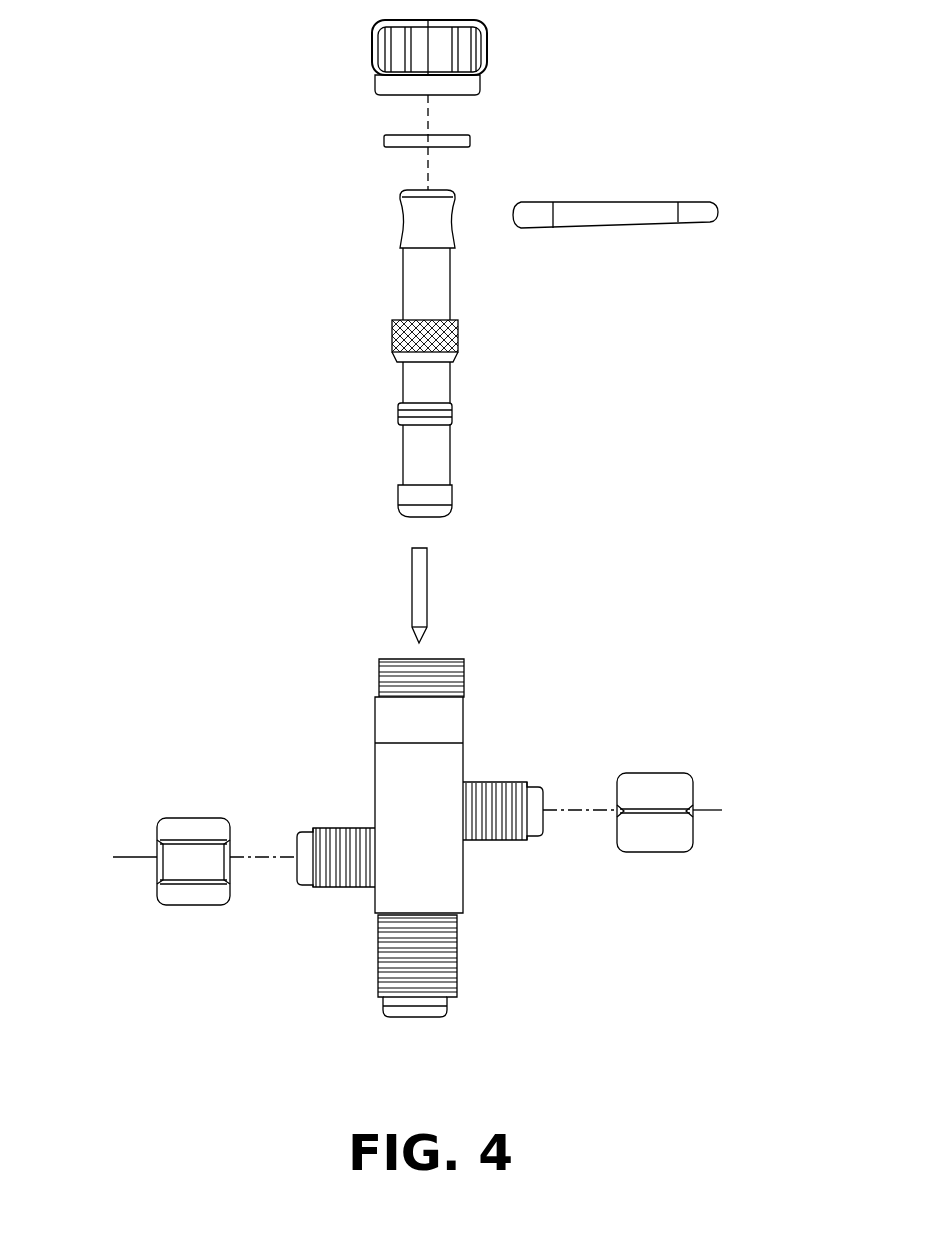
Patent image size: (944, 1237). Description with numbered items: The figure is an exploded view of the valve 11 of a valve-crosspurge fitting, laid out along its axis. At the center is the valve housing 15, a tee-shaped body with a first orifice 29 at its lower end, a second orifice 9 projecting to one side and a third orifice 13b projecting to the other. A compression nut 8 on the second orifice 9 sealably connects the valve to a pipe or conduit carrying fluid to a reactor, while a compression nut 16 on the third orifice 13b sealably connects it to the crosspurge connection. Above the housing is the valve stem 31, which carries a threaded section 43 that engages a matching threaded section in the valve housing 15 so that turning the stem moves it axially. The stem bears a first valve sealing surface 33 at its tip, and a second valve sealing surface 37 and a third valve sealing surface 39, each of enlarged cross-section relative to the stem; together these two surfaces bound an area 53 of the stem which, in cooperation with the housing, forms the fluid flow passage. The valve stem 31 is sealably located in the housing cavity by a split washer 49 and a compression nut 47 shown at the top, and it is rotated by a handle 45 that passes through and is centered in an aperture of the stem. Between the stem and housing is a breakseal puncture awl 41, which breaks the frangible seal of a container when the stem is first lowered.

The compression nut 8 is at (205, 818).
The second orifice 9 is at (300, 887).
The valve 11 is at (675, 405).
The third orifice 13b is at (545, 822).
The valve housing 15 is at (463, 748).
The compression nut 16 is at (650, 773).
The first orifice 29 is at (447, 1000).
The valve stem 31 is at (403, 290).
The first valve sealing surface 33 is at (400, 514).
The second valve sealing surface 37 is at (452, 492).
The third valve sealing surface 39 is at (452, 412).
The breakseal puncture awl 41 is at (427, 590).
The threaded section 43 is at (458, 335).
The handle 45 is at (616, 202).
The compression nut 47 is at (488, 44).
The split washer 49 is at (400, 147).
The area 53 is at (403, 452).